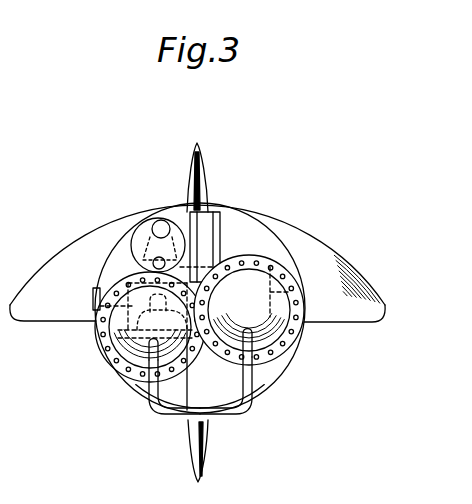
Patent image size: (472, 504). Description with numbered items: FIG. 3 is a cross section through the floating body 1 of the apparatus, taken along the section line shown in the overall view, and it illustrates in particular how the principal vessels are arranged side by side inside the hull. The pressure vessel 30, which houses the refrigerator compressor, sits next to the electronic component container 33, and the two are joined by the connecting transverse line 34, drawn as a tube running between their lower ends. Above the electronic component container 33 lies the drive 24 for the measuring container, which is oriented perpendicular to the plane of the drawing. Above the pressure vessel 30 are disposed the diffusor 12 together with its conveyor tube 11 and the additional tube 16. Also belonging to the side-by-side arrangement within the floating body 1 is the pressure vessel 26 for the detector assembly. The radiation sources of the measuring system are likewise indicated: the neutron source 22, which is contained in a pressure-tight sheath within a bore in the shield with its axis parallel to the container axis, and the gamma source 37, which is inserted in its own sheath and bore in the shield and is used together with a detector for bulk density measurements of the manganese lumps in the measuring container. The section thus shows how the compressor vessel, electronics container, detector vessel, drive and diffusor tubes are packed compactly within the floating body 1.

The floating body 1 is at (247, 229).
The conveyor tube 11 is at (153, 219).
The diffusor 12 is at (178, 231).
The additional tube 16 is at (153, 263).
The neutron source 22 is at (133, 367).
The drive 24 is at (208, 214).
The pressure vessel for the detector assembly 26 is at (140, 318).
The pressure vessel for the refrigerator compressor 30 is at (149, 368).
The electronic component container 33 is at (288, 343).
The connecting transverse line 34 is at (253, 386).
The gamma source 37 is at (94, 297).